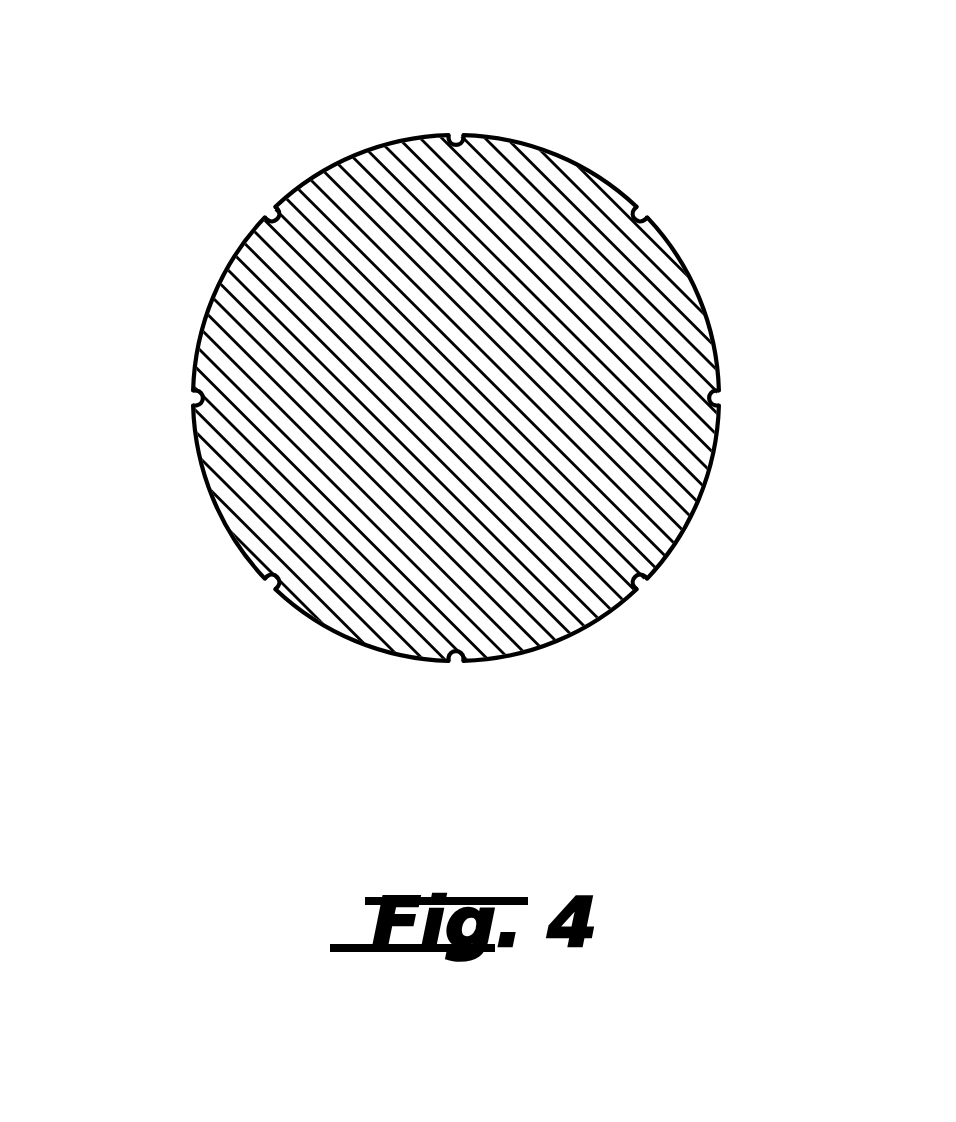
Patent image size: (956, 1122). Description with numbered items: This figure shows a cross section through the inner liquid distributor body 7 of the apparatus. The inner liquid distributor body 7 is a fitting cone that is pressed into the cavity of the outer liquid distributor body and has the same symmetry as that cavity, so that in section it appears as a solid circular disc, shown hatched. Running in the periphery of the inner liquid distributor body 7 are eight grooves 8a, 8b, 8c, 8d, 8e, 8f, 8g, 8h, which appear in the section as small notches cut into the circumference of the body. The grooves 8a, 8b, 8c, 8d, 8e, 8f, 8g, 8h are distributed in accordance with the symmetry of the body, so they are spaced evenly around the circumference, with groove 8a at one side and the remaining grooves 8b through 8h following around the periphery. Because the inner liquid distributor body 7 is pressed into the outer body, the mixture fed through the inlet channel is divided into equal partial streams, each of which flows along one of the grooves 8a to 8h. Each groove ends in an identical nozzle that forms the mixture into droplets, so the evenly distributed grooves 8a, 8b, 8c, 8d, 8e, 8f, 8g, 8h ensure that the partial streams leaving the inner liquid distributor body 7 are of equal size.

The inner liquid distributor body 7 is at (532, 147).
The groove 8a is at (716, 401).
The groove 8b is at (197, 397).
The groove 8c is at (272, 579).
The groove 8d is at (456, 652).
The groove 8e is at (640, 582).
The groove 8f is at (640, 216).
The groove 8g is at (455, 143).
The groove 8h is at (271, 215).